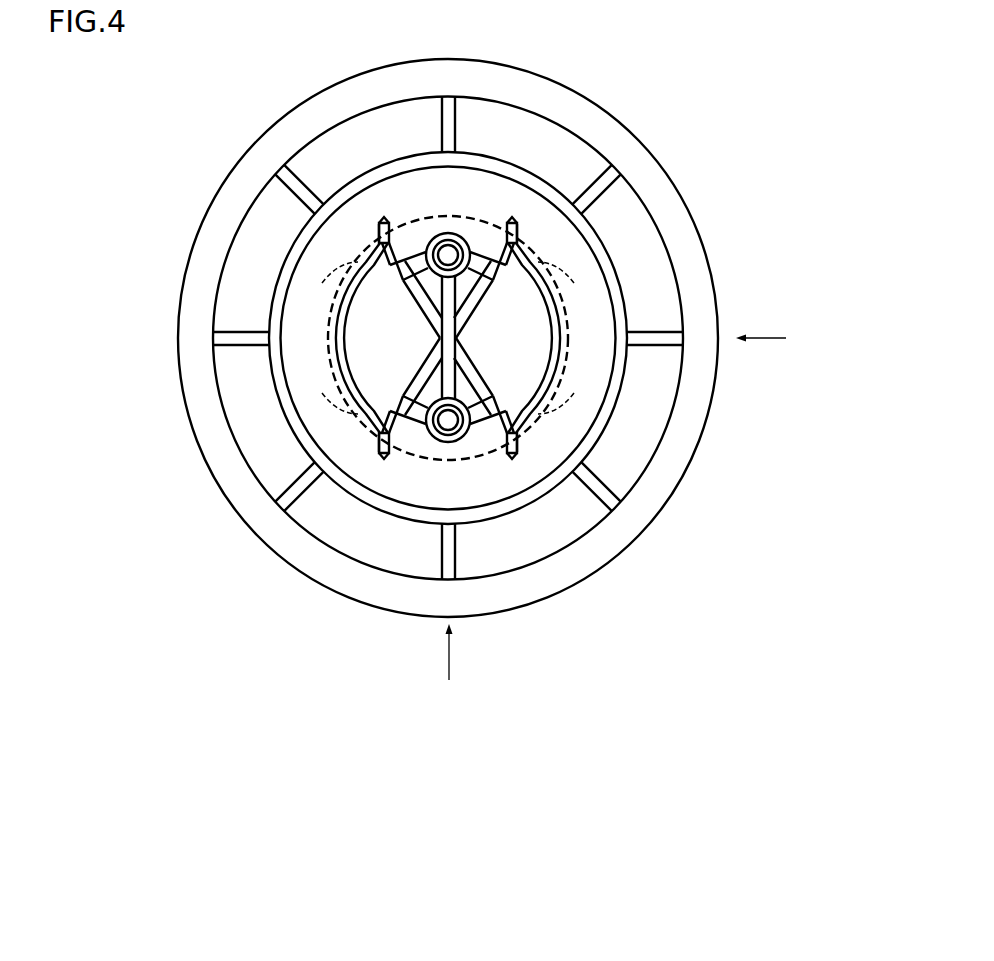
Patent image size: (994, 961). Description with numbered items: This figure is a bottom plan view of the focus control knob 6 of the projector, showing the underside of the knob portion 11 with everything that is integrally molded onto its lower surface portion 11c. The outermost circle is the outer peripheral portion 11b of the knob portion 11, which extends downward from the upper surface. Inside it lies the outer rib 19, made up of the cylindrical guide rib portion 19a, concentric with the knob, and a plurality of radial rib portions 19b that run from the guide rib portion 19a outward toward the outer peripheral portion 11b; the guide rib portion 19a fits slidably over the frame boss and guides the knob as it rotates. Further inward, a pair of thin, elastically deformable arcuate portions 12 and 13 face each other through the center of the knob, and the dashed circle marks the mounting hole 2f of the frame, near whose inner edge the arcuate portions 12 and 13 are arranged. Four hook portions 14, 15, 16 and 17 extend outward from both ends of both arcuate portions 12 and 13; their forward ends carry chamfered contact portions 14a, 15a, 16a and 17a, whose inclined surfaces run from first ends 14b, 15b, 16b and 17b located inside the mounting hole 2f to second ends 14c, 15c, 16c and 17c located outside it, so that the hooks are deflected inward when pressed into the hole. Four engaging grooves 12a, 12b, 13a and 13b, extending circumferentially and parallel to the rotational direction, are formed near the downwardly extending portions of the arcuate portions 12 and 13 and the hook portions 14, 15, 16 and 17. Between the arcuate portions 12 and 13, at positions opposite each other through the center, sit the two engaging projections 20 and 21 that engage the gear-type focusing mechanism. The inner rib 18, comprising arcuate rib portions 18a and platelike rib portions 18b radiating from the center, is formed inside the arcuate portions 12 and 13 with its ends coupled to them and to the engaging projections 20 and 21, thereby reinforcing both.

The focus control knob 6 is at (706, 117).
The knob portion 11 is at (765, 455).
The outer peripheral portion 11b is at (662, 487).
The lower surface portion 11c is at (648, 440).
The arcuate portion 12 is at (329, 329).
The engaging groove 12a is at (356, 282).
The engaging groove 12b is at (352, 421).
The arcuate portion 13 is at (568, 336).
The engaging groove 13a is at (542, 283).
The engaging groove 13b is at (545, 421).
The hook portion 14 is at (378, 236).
The contact portion 14a is at (385, 220).
The first end 14b is at (391, 256).
The second end 14c is at (378, 226).
The hook portion 15 is at (378, 446).
The contact portion 15a is at (389, 455).
The first end 15b is at (392, 430).
The second end 15c is at (383, 455).
The hook portion 16 is at (518, 236).
The contact portion 16a is at (511, 220).
The first end 16b is at (505, 256).
The second end 16c is at (518, 226).
The hook portion 17 is at (518, 446).
The contact portion 17a is at (507, 455).
The first end 17b is at (506, 430).
The second end 17c is at (514, 455).
The inner rib 18 is at (418, 334).
The arcuate rib portion 18a is at (410, 268).
The platelike rib portion 18b is at (478, 308).
The outer rib 19 is at (265, 418).
The guide rib portion 19a is at (375, 503).
The radial rib portion 19b is at (450, 115).
The engaging projection 20 is at (448, 258).
The engaging projection 21 is at (448, 423).
The mounting hole 2f is at (466, 222).